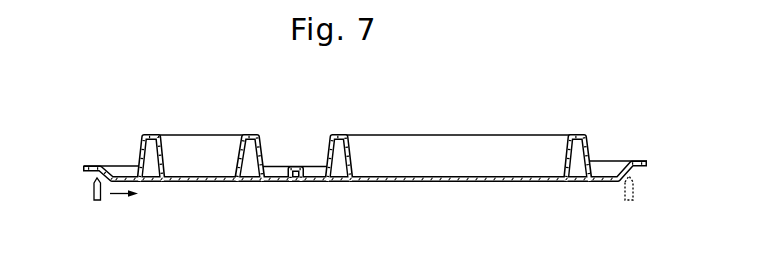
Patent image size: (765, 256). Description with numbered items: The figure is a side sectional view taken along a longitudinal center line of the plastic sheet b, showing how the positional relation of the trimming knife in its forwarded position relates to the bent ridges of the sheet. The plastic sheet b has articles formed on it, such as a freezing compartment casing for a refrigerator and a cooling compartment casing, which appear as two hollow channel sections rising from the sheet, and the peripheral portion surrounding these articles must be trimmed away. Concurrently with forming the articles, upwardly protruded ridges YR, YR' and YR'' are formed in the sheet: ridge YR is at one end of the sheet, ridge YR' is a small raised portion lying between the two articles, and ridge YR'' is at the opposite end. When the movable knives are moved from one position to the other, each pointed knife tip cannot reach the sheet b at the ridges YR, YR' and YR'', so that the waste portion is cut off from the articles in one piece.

The transversely extending ridge YR is at (89, 201).
The transversely extending ridge YR' is at (296, 201).
The ridge YR'' is at (640, 195).
The plastic sheet b is at (432, 182).